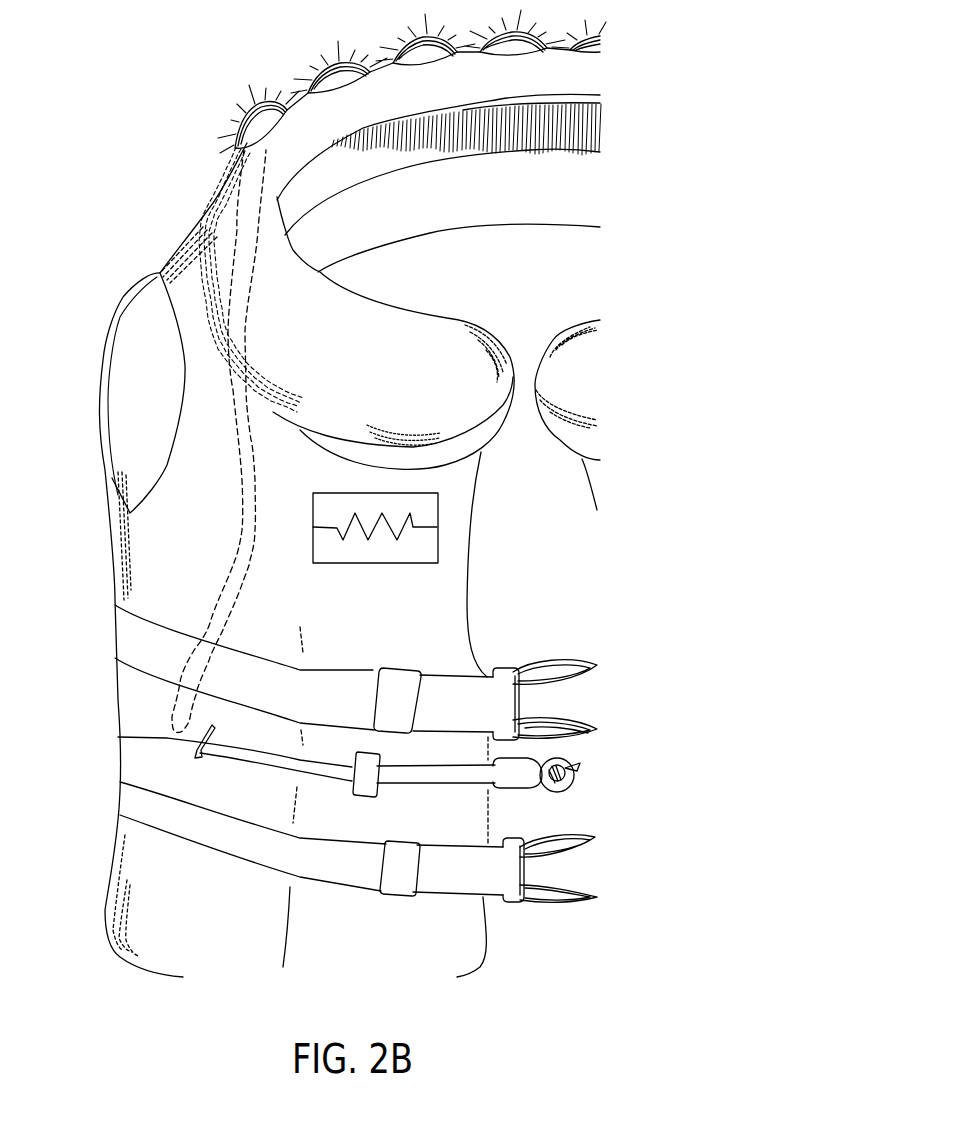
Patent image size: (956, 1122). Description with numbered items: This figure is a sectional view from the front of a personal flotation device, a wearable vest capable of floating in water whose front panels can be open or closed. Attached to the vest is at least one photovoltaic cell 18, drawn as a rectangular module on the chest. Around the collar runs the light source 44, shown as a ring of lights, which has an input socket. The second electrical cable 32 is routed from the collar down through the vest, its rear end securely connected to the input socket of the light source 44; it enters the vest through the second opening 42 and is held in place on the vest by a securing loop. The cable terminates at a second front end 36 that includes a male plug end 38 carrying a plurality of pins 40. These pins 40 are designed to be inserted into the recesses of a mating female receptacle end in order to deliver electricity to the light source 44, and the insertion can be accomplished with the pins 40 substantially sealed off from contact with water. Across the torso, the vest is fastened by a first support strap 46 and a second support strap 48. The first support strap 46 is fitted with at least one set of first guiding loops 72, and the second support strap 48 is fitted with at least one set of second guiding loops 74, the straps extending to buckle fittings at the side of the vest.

The photovoltaic cell 18 is at (343, 563).
The second electrical cable 32 is at (230, 390).
The second front end 36 is at (513, 787).
The male plug end 38 is at (572, 790).
The plurality of pins 40 is at (566, 763).
The second opening 42 is at (187, 743).
The light source 44 is at (233, 123).
The first support strap 46 is at (115, 636).
The second support strap 48 is at (120, 790).
The first guiding loops 72 is at (405, 680).
The second guiding loops 74 is at (393, 880).